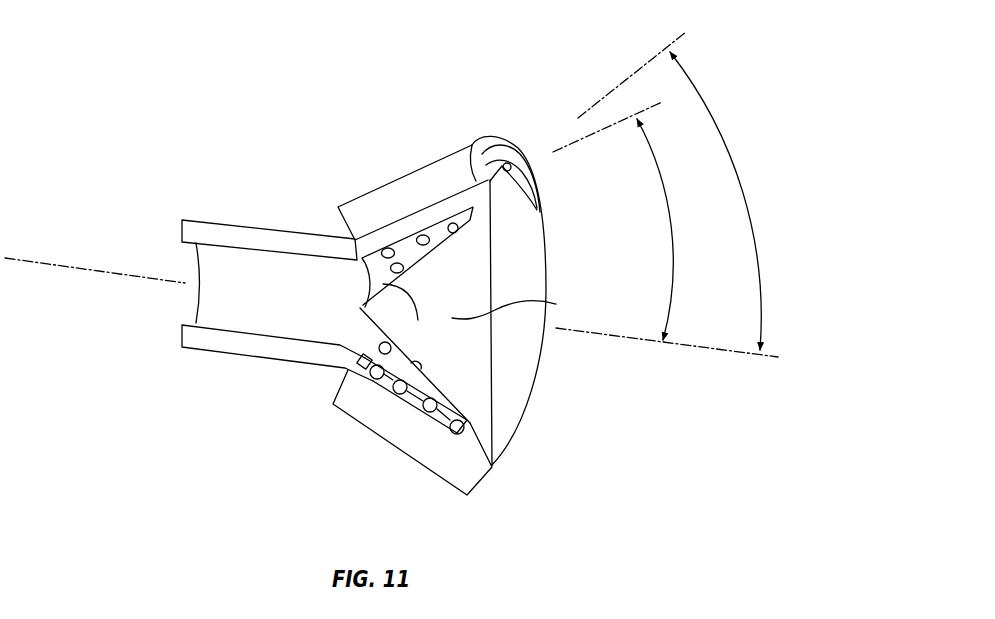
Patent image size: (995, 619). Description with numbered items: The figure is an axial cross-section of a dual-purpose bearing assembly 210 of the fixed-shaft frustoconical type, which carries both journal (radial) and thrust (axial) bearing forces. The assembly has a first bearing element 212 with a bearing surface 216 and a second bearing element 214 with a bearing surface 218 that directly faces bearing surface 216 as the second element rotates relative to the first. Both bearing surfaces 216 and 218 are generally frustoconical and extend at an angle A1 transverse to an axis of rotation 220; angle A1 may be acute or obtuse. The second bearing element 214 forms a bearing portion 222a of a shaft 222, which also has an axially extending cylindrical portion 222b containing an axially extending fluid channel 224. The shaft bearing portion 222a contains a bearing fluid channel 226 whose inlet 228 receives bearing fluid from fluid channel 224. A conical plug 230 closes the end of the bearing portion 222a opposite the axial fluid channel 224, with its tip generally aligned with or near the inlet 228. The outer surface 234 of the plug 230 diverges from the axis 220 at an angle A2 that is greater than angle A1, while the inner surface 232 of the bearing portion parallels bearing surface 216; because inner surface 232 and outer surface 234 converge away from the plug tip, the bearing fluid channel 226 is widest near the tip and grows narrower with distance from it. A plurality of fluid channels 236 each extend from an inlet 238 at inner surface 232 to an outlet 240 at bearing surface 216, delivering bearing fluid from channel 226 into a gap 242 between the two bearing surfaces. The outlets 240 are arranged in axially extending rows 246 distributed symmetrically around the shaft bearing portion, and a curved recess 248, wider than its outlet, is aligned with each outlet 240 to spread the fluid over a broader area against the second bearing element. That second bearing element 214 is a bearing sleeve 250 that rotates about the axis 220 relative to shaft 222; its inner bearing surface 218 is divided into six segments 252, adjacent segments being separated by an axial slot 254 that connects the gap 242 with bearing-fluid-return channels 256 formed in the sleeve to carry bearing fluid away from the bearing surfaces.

The dual-purpose bearing assembly 210 is at (205, 137).
The first bearing element 212 is at (541, 360).
The second bearing element 214 is at (440, 157).
The bearing surface 216 is at (474, 145).
The bearing surface 218 is at (455, 234).
The axis of rotation 220 is at (70, 272).
The shaft 222 is at (280, 229).
The bearing portion 222a is at (528, 282).
The axially extending cylindrical portion 222b is at (200, 351).
The axially extending fluid channel 224 is at (220, 300).
The bearing fluid channel 226 is at (356, 346).
The inlet 228 is at (336, 311).
The conical plug 230 is at (523, 310).
The inner surface 232 is at (364, 261).
The outer surface 234 is at (409, 313).
The fluid channels 236 is at (392, 404).
The inlet 238 is at (362, 367).
The outlet 240 is at (360, 373).
The gap 242 is at (495, 468).
The rows 246 is at (455, 456).
The recess 248 is at (432, 427).
The bearing sleeve 250 is at (457, 150).
The segments 252 is at (538, 210).
The slot 254 is at (520, 168).
The bearing-fluid-return channels 256 is at (517, 153).
The angle A1 is at (665, 229).
The angle A2 is at (669, 191).